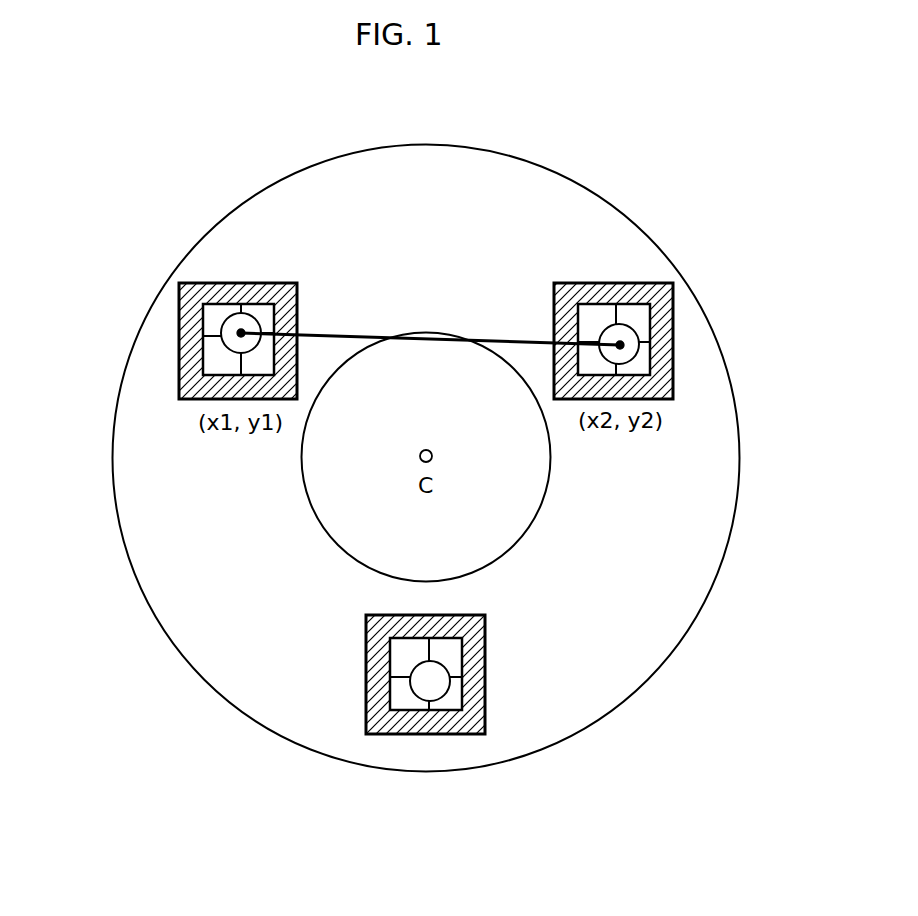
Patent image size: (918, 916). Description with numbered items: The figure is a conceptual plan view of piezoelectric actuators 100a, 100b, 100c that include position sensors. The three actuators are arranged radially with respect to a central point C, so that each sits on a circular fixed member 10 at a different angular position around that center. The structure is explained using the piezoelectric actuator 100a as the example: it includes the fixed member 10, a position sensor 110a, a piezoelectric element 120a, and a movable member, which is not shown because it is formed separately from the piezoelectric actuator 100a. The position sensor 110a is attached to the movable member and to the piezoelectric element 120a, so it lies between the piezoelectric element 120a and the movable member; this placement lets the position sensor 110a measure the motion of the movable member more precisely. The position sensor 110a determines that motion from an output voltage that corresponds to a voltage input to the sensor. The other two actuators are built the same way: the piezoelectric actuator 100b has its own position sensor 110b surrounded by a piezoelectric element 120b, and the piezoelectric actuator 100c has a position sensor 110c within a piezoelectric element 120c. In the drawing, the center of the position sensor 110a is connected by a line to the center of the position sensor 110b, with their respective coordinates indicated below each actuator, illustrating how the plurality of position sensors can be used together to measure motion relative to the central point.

The fixed member 10 is at (573, 181).
The piezoelectric actuator 100a is at (180, 308).
The position sensor 110a is at (233, 317).
The piezoelectric element 120a is at (193, 370).
The piezoelectric actuator 100b is at (670, 307).
The position sensor 110b is at (633, 313).
The piezoelectric element 120b is at (660, 350).
The piezoelectric actuator 100c is at (477, 708).
The position sensor 110c is at (438, 695).
The piezoelectric element 120c is at (385, 725).